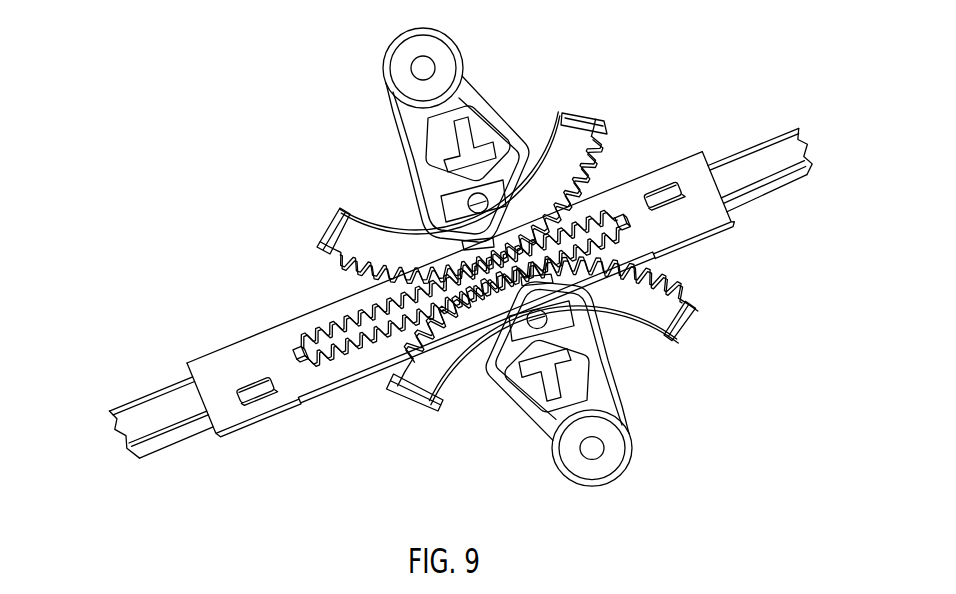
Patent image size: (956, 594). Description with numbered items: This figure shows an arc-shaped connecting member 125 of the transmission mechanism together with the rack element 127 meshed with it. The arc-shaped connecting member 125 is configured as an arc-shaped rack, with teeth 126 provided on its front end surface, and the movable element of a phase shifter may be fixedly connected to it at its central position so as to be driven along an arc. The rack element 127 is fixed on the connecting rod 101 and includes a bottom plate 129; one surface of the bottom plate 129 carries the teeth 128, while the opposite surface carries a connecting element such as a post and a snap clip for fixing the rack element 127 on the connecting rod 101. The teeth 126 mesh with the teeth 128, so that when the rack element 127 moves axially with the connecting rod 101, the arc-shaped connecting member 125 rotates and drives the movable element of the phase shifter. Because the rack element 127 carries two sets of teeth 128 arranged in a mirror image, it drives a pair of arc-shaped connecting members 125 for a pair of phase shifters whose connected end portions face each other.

The connecting rod 101 is at (152, 417).
The arc-shaped connecting member 125 is at (351, 240).
The teeth 126 is at (606, 156).
The rack element 127 is at (686, 212).
The teeth 128 is at (310, 333).
The bottom plate 129 is at (238, 357).